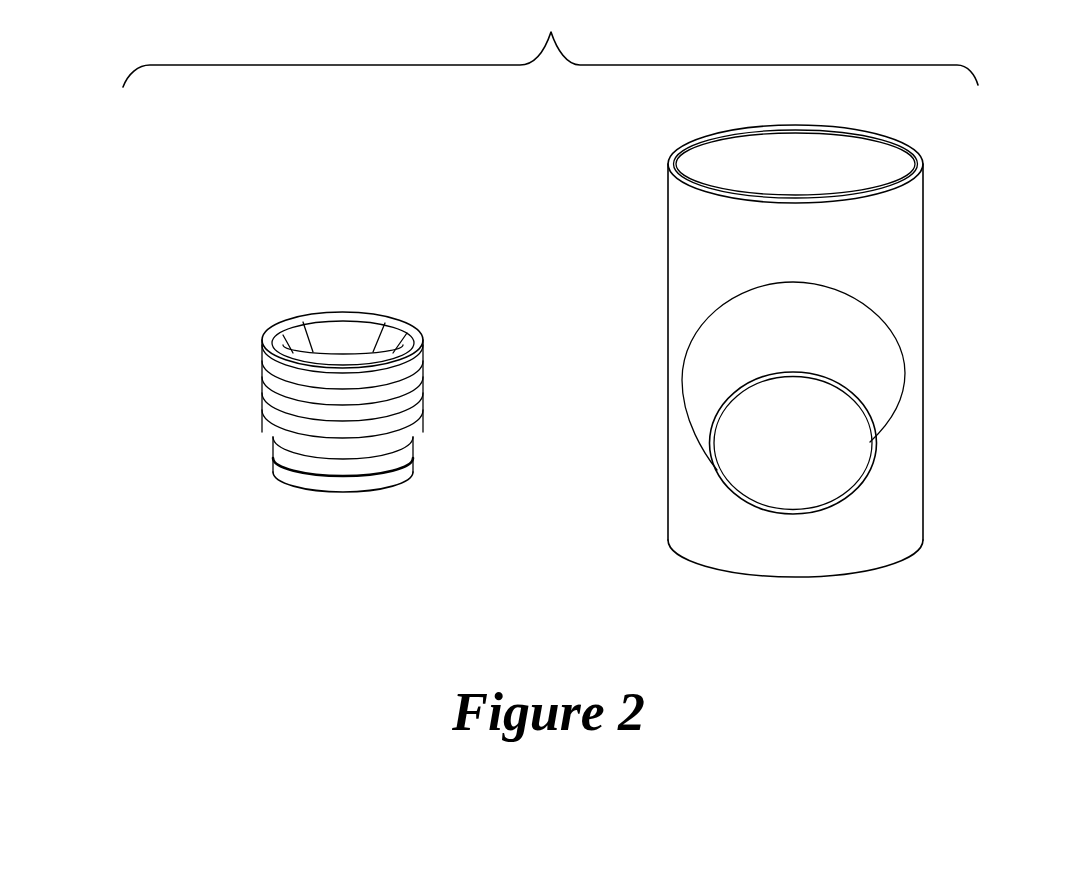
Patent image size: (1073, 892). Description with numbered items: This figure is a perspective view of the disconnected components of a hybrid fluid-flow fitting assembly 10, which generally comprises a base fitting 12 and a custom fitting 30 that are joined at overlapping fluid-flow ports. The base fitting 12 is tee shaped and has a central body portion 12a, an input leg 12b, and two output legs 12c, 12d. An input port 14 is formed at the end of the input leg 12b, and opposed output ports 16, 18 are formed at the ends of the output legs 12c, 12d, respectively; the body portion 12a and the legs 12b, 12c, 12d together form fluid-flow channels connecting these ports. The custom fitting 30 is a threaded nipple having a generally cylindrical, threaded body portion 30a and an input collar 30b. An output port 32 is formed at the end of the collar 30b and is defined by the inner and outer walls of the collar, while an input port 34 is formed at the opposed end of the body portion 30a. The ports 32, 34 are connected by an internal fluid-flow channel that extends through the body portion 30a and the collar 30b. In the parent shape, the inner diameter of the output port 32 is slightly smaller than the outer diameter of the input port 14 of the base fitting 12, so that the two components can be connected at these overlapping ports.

The fitting assembly 10 is at (550, 43).
The base fitting 12 is at (930, 308).
The central body portion 12a is at (907, 366).
The input leg 12b is at (785, 322).
The output leg 12c is at (923, 510).
The output leg 12d is at (923, 237).
The input port 14 is at (717, 473).
The output port 16 is at (907, 147).
The output port 18 is at (857, 577).
The custom fitting 30 is at (240, 406).
The threaded body portion 30a is at (262, 360).
The input collar 30b is at (273, 468).
The output port 32 is at (348, 492).
The input port 34 is at (375, 313).